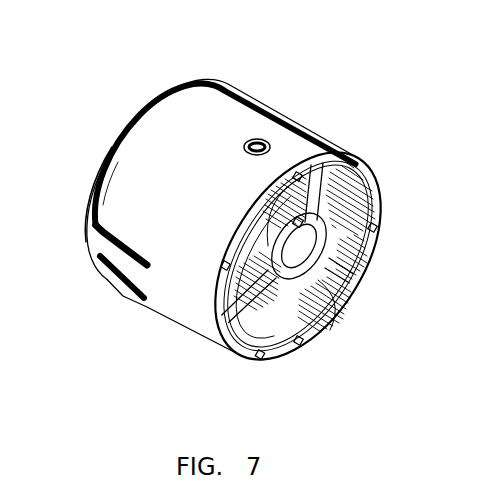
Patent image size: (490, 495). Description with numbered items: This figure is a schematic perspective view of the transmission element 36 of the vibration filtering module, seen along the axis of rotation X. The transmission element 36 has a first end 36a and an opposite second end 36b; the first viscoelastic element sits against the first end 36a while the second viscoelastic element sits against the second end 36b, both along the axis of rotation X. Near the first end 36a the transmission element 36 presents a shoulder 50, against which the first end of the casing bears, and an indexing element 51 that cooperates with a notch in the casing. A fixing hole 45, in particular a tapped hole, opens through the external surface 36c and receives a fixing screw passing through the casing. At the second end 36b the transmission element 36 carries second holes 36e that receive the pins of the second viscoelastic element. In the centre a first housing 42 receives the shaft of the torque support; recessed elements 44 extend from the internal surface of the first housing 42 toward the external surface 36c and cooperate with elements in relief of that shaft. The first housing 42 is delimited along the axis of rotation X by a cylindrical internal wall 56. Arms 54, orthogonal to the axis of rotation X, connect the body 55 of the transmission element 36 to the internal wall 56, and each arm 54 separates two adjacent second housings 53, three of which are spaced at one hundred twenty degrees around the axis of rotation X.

The transmission element 36 is at (88, 92).
The first end of the transmission element 36a is at (101, 169).
The second end of the transmission element 36b is at (372, 182).
The external surface of the transmission element 36c is at (218, 101).
The second holes 36e is at (300, 348).
The first housing 42 is at (306, 257).
The recessed element 44 is at (328, 229).
The fixing hole 45 is at (260, 138).
The shoulder 50 is at (157, 110).
The indexing element 51 is at (145, 272).
The second housing 53 is at (234, 278).
The arm 54 is at (320, 194).
The body of the transmission element 55 is at (143, 200).
The internal wall 56 is at (292, 226).
The axis of rotation X is at (262, 258).